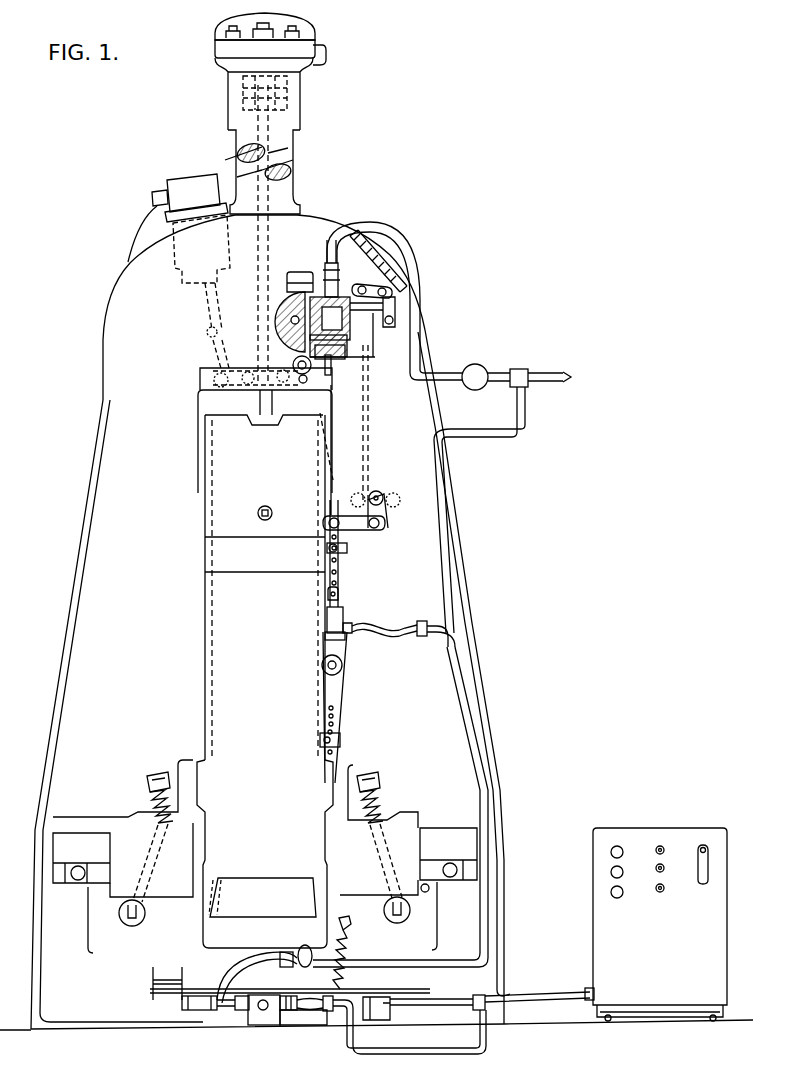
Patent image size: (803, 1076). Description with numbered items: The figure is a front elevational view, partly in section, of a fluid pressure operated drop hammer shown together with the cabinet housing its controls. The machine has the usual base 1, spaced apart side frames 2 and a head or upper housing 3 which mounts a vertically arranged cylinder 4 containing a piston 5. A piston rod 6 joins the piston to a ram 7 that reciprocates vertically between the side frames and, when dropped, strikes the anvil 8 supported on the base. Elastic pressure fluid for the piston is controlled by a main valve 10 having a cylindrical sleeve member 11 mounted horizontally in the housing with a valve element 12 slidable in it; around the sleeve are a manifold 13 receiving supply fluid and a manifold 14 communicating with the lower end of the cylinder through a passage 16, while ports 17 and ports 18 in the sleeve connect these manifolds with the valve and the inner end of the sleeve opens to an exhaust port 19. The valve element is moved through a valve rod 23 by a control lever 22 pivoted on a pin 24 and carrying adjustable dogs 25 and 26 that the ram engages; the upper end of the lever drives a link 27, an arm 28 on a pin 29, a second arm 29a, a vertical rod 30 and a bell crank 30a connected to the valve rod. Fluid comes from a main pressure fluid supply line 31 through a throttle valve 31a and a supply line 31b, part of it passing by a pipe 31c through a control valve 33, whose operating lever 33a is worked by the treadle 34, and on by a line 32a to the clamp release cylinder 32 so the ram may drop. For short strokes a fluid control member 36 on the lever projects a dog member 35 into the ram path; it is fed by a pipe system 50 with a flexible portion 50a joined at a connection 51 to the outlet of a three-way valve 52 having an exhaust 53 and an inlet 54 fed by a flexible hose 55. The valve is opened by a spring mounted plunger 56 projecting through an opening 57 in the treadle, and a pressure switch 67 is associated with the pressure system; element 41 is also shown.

The base 1 is at (268, 939).
The side frames 2 is at (62, 700).
The head or upper housing 3 is at (128, 302).
The cylinder 4 is at (238, 176).
The piston 5 is at (300, 112).
The piston rod 6 is at (288, 170).
The ram 7 is at (268, 469).
The anvil 8 is at (258, 877).
The main valve 10 is at (310, 350).
The cylindrical sleeve member 11 is at (312, 318).
The valve element 12 is at (324, 360).
The manifold 13 is at (352, 298).
The manifold 14 is at (334, 296).
The passage 16 is at (284, 300).
The ports 17 is at (331, 362).
The ports 18 is at (307, 370).
The exhaust port 19 is at (292, 323).
The control lever 22 is at (340, 572).
The valve rod 23 is at (370, 330).
The pin 24 is at (344, 663).
The dog 25 is at (318, 742).
The dog 26 is at (348, 548).
The link 27 is at (356, 517).
The arm 28 is at (390, 520).
The pin 29 is at (382, 495).
The arm 29a is at (401, 500).
The rod 30 is at (369, 433).
The bell crank 30a is at (398, 318).
The main pressure fluid supply line 31 is at (543, 372).
The throttle valve 31a is at (501, 353).
The supply line 31b is at (440, 373).
The pipe 31c is at (452, 503).
The clamp release cylinder 32 is at (183, 178).
The line 32a is at (319, 1046).
The control valve 33 is at (385, 1021).
The operating lever 33a is at (420, 1005).
The treadle 34 is at (190, 988).
The dog member 35 is at (327, 625).
The fluid control member 36 is at (345, 615).
The adjuster 41 is at (340, 594).
The pipe system 50 is at (453, 735).
The flexible portion 50a is at (420, 637).
The connection 51 is at (355, 633).
The three-way valve 52 is at (262, 1014).
The exhaust 53 is at (268, 1010).
The inlet 54 is at (287, 996).
The flexible hose 55 is at (313, 998).
The plunger 56 is at (266, 992).
The opening 57 is at (252, 1011).
The pressure switch 67 is at (300, 272).